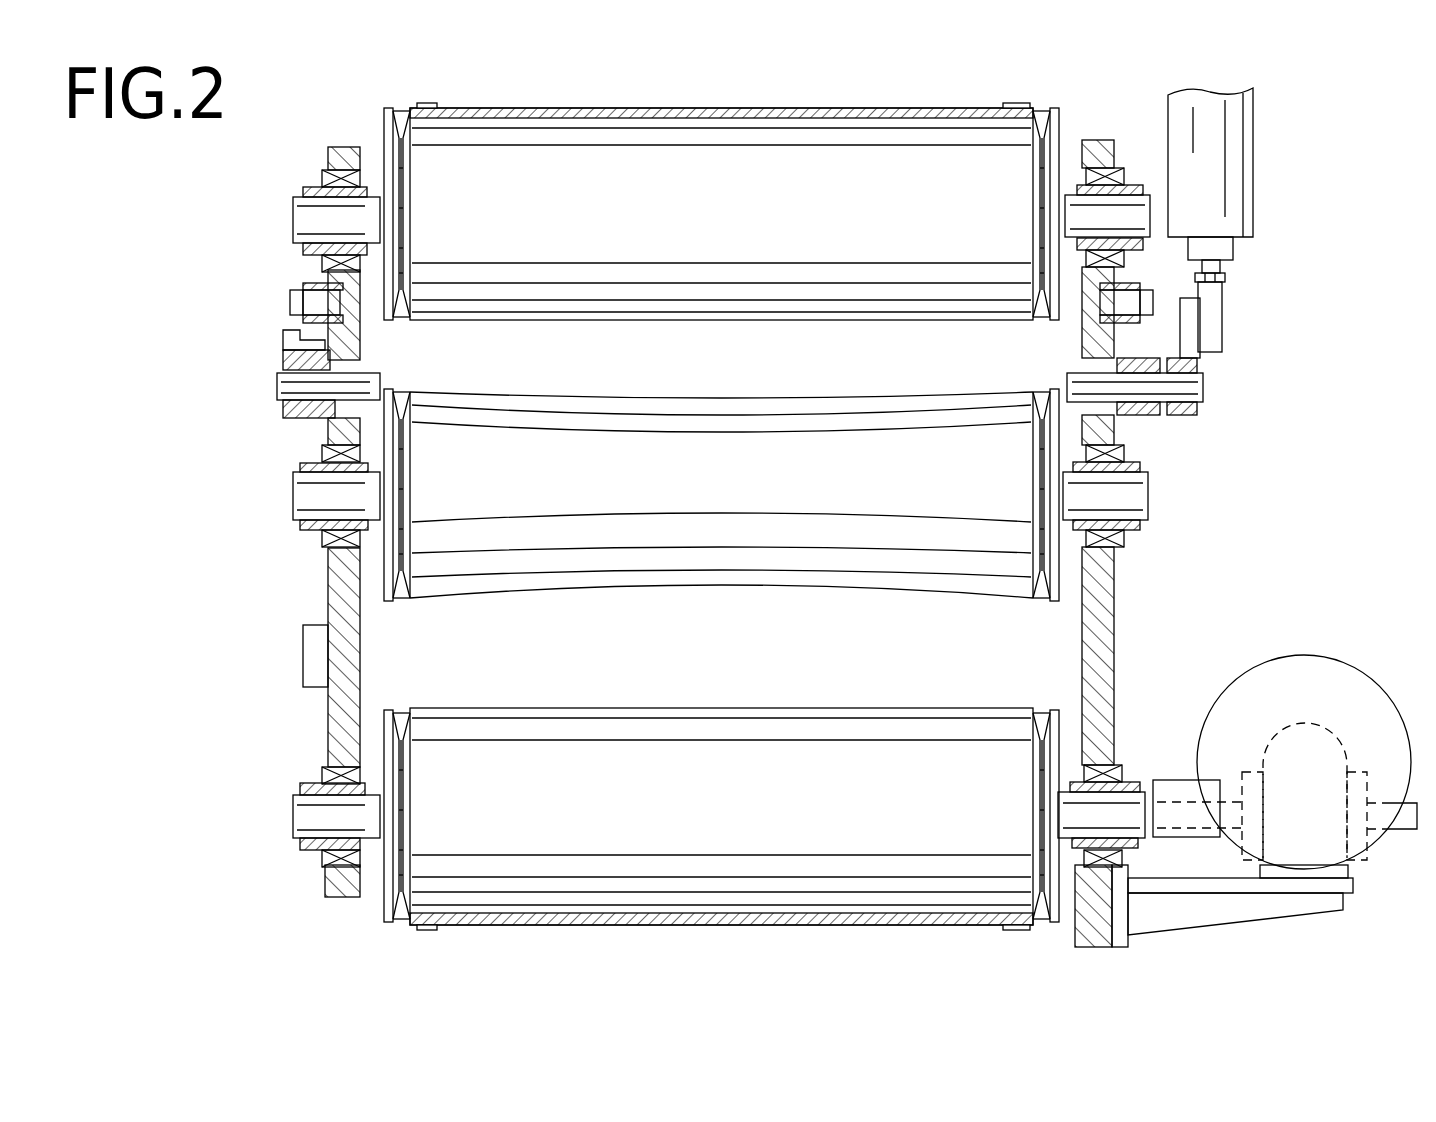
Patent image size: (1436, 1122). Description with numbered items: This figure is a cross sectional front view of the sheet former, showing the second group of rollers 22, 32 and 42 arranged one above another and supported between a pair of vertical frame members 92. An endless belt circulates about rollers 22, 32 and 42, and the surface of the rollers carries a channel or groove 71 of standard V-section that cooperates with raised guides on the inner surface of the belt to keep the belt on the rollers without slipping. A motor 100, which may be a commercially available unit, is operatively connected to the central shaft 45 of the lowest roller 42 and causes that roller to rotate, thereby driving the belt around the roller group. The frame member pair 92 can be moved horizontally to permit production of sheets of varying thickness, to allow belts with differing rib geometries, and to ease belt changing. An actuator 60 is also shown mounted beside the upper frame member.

The roller 22 is at (740, 221).
The roller 32 is at (725, 504).
The roller 42 is at (716, 820).
The channel 71 is at (400, 323).
The frame member pair 92 is at (345, 592).
The central shaft 45 is at (1178, 790).
The motor 100 is at (1390, 668).
The cylinder 60 is at (1272, 176).